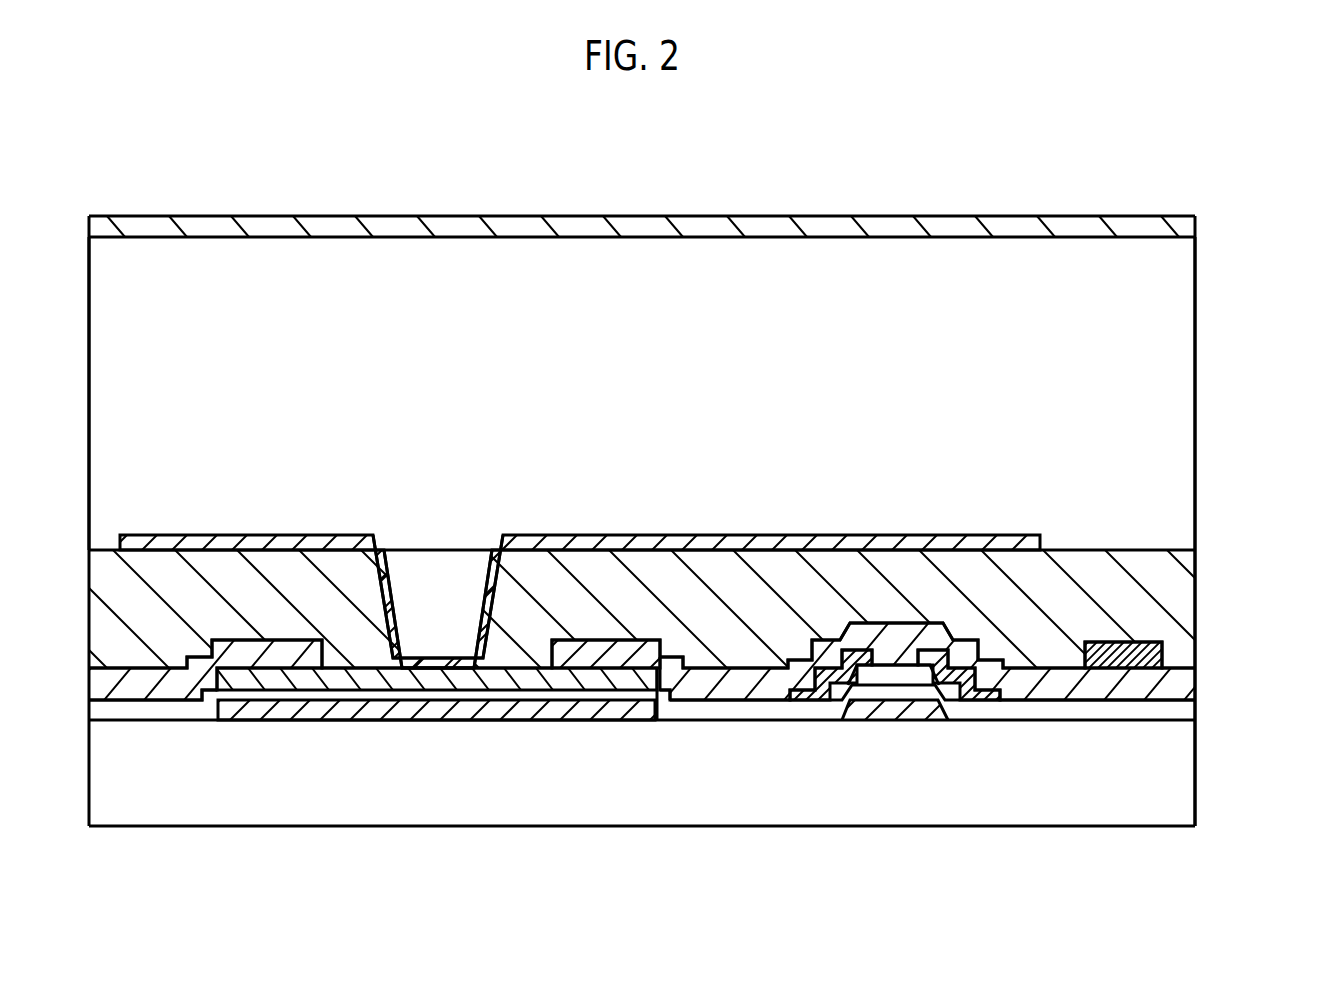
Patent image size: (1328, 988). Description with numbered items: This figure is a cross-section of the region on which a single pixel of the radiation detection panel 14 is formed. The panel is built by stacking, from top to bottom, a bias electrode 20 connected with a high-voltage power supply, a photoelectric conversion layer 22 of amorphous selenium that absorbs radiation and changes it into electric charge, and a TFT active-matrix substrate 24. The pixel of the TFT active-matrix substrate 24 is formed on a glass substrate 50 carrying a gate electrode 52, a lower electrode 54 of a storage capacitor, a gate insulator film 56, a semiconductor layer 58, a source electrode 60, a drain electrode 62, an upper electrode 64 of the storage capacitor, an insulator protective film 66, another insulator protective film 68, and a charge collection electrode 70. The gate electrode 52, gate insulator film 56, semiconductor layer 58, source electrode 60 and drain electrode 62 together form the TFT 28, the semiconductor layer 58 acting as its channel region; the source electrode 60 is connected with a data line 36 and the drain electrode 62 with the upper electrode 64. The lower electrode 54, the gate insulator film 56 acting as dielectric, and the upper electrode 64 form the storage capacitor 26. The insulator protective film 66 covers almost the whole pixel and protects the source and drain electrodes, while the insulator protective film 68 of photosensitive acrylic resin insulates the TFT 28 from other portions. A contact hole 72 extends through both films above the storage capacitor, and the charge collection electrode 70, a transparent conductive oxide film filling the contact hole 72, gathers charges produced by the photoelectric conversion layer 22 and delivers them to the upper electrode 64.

The radiation detection panel 14 is at (1059, 158).
The bias electrode 20 is at (1190, 225).
The photoelectric conversion layer 22 is at (1178, 305).
The TFT active-matrix substrate 24 is at (1253, 555).
The storage capacitor 26 is at (439, 767).
The TFT 28 is at (927, 688).
The data line 36 is at (1108, 660).
The glass substrate 50 is at (541, 811).
The gate electrode 52 is at (877, 712).
The lower electrode of the storage capacitor 54 is at (453, 710).
The gate insulator film 56 is at (747, 712).
The semiconductor layer 58 is at (915, 703).
The source electrode 60 is at (987, 698).
The drain electrode 62 is at (803, 700).
The upper electrode of the storage capacitor 64 is at (277, 680).
The insulator protective film 66 is at (687, 692).
The insulator protective film 68 is at (213, 597).
The charge collection electrode 70 is at (323, 538).
The contact hole 72 is at (438, 577).